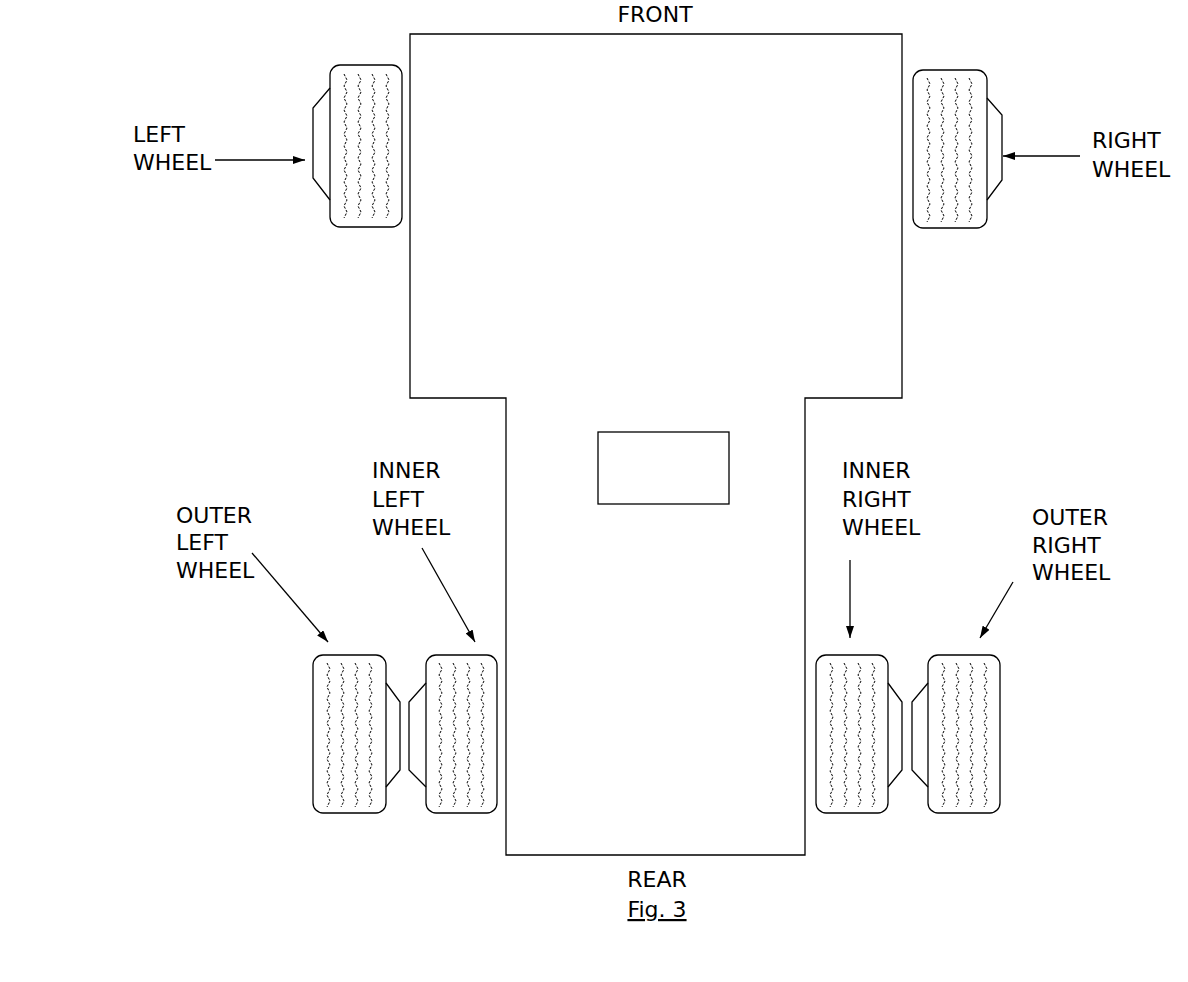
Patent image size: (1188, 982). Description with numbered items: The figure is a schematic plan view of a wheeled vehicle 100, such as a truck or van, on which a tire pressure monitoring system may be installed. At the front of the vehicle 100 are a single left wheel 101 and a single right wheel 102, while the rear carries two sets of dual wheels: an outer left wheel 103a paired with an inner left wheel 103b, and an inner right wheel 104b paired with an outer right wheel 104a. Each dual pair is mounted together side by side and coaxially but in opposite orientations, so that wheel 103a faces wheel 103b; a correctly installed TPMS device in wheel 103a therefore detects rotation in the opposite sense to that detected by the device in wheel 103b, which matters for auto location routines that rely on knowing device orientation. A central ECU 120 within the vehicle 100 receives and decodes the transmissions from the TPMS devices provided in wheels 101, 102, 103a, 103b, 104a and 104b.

The wheeled vehicle 100 is at (656, 444).
The left front wheel 101 is at (357, 163).
The right front wheel 102 is at (957, 166).
The outer left rear wheel 103a is at (356, 755).
The inner left rear wheel 103b is at (454, 755).
The outer right rear wheel 104a is at (956, 755).
The inner right rear wheel 104b is at (859, 755).
The central ECU 120 is at (663, 468).